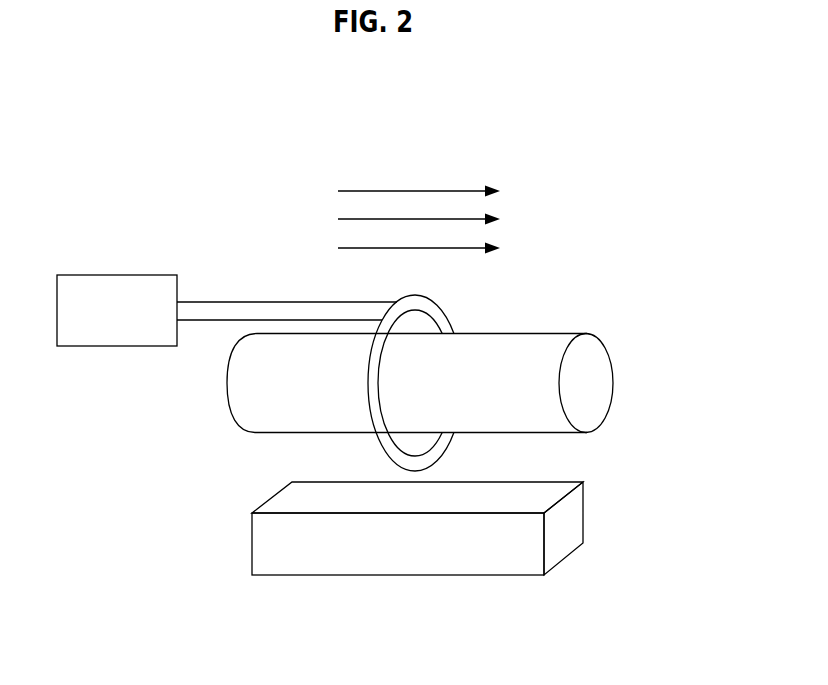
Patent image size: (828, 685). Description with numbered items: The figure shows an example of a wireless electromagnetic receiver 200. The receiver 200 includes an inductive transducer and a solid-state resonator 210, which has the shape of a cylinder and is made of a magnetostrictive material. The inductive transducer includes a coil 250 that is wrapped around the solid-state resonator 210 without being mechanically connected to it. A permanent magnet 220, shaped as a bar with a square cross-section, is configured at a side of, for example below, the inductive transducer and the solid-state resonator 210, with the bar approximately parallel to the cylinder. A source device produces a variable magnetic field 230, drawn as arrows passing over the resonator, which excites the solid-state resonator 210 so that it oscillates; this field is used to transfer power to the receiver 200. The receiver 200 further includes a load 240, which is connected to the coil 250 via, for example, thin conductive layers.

The wireless electromagnetic receiver 200 is at (258, 192).
The solid-state resonator 210 is at (593, 380).
The permanent magnet 220 is at (575, 515).
The variable magnetic field 230 is at (419, 190).
The load 240 is at (115, 274).
The coil 250 is at (450, 313).